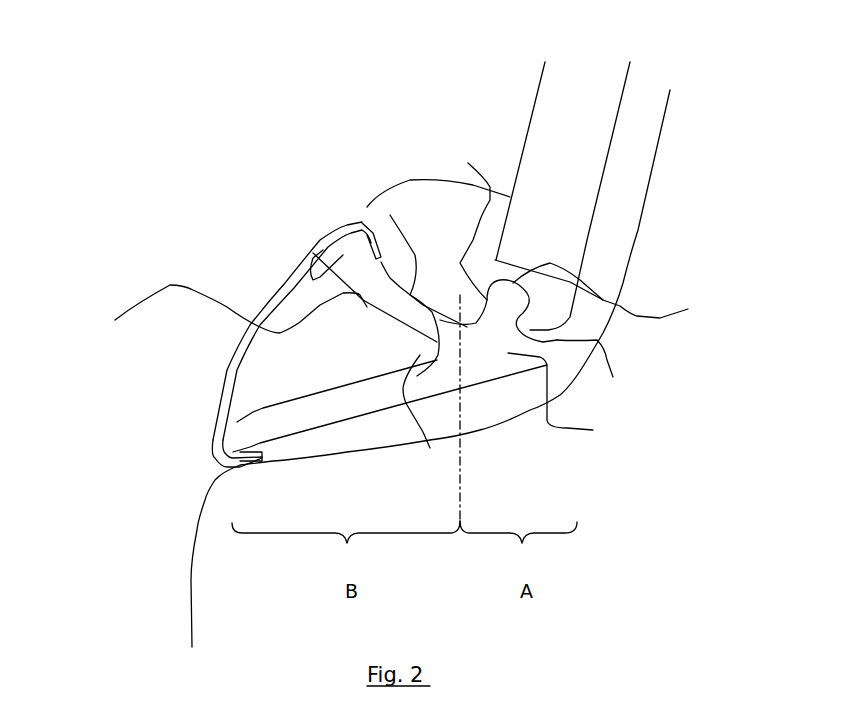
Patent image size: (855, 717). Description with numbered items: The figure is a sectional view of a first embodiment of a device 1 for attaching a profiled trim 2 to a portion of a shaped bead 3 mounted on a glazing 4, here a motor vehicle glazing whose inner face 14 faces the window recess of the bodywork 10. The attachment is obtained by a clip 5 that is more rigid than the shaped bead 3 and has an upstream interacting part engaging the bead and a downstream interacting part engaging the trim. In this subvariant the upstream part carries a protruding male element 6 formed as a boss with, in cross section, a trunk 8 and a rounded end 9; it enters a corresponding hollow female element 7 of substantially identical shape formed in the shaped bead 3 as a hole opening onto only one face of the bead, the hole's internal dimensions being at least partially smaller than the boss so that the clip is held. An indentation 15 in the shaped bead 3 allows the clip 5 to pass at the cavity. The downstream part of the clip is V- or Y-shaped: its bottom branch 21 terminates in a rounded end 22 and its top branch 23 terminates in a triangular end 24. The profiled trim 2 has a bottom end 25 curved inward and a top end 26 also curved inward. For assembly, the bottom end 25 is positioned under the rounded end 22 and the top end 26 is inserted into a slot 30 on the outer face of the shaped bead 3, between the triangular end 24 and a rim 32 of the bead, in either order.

The device 1 is at (235, 188).
The profiled trim 2 is at (245, 337).
The shaped bead 3 is at (433, 180).
The glazing 4 is at (552, 67).
The clip 5 is at (565, 399).
The protruding male element 6 is at (598, 373).
The hollow female element 7 is at (517, 300).
The trunk 8 is at (465, 231).
The rounded end 9 is at (604, 296).
The bodywork 10 is at (660, 127).
The inner face 14 is at (600, 190).
The indentation 15 is at (340, 419).
The bottom branch 21 is at (357, 400).
The rounded end 22 is at (222, 440).
The top branch 23 is at (220, 319).
The triangular end 24 is at (313, 280).
The bottom end 25 is at (218, 482).
The top end 26 is at (360, 218).
The slot 30 is at (358, 298).
The rim 32 is at (397, 217).